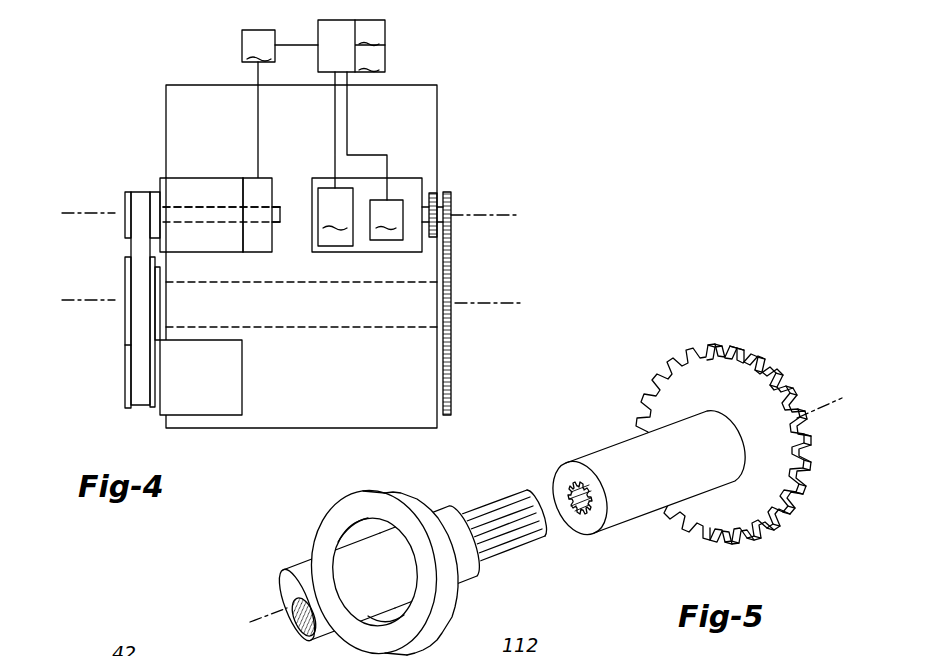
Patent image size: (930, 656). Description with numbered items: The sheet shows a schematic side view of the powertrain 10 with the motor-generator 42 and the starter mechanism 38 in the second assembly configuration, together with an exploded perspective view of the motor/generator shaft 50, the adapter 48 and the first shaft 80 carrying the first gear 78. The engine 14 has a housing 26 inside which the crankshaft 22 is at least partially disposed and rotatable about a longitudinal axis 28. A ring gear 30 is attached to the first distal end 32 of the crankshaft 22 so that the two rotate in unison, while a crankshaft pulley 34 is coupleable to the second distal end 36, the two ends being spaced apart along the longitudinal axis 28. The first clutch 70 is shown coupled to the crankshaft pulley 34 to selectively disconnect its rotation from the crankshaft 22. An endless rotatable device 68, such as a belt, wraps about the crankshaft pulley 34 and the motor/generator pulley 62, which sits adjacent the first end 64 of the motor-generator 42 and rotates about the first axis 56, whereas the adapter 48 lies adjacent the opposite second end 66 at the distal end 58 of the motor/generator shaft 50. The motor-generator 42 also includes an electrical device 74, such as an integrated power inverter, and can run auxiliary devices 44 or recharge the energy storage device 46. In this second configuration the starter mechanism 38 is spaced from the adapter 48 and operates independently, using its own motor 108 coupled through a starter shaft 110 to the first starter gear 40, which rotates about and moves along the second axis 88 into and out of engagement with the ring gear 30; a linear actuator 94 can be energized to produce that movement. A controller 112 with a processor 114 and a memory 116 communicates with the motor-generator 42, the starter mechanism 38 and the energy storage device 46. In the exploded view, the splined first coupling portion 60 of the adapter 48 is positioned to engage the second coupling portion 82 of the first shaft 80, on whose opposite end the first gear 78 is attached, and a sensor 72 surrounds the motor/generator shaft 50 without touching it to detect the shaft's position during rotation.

In FIG. 4, the powertrain 10 is at (116, 33).
In FIG. 4, the engine 14 is at (437, 112).
In FIG. 4, the crankshaft 22 is at (315, 330).
In FIG. 4, the housing 26 is at (413, 97).
In FIG. 4, the longitudinal axis 28 is at (507, 306).
In FIG. 4, the ring gear 30 is at (452, 403).
In FIG. 4, the first distal end 32 is at (442, 328).
In FIG. 4, the crankshaft pulley 34 is at (127, 320).
In FIG. 4, the second distal end 36 is at (163, 296).
In FIG. 4, the starter mechanism 38 is at (465, 168).
In FIG. 4, the first starter gear 40 is at (431, 188).
In FIG. 4, the motor-generator 42 is at (205, 178).
In FIG. 4, the auxiliary devices 44 is at (198, 427).
In FIG. 4, the energy storage device 46 is at (280, 104).
In FIG. 4, the adapter 48 is at (277, 224).
In FIG. 5, the adapter 48 is at (517, 577).
In FIG. 4, the motor/generator shaft 50 is at (190, 224).
In FIG. 5, the motor/generator shaft 50 is at (305, 567).
In FIG. 4, the first axis 56 is at (70, 210).
In FIG. 5, the first axis 56 is at (818, 408).
In FIG. 5, the distal end 58 is at (460, 512).
In FIG. 5, the first coupling portion 60 is at (517, 543).
In FIG. 4, the motor/generator pulley 62 is at (126, 226).
In FIG. 4, the first end 64 is at (158, 183).
In FIG. 4, the second end 66 is at (276, 183).
In FIG. 4, the endless rotatable device 68 is at (138, 270).
In FIG. 4, the first clutch 70 is at (158, 318).
In FIG. 5, the sensor 72 is at (443, 612).
In FIG. 4, the electrical device 74 is at (260, 249).
In FIG. 5, the first gear 78 is at (727, 523).
In FIG. 5, the first shaft 80 is at (630, 500).
In FIG. 5, the second coupling portion 82 is at (557, 490).
In FIG. 4, the second axis 88 is at (516, 218).
In FIG. 4, the linear actuator 94 is at (386, 220).
In FIG. 4, the motor 108 is at (335, 217).
In FIG. 4, the starter shaft 110 is at (441, 218).
In FIG. 4, the controller 112 is at (318, 23).
In FIG. 4, the processor 114 is at (370, 34).
In FIG. 4, the memory 116 is at (370, 60).